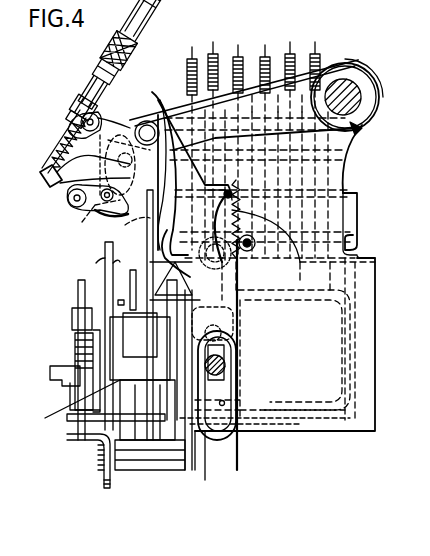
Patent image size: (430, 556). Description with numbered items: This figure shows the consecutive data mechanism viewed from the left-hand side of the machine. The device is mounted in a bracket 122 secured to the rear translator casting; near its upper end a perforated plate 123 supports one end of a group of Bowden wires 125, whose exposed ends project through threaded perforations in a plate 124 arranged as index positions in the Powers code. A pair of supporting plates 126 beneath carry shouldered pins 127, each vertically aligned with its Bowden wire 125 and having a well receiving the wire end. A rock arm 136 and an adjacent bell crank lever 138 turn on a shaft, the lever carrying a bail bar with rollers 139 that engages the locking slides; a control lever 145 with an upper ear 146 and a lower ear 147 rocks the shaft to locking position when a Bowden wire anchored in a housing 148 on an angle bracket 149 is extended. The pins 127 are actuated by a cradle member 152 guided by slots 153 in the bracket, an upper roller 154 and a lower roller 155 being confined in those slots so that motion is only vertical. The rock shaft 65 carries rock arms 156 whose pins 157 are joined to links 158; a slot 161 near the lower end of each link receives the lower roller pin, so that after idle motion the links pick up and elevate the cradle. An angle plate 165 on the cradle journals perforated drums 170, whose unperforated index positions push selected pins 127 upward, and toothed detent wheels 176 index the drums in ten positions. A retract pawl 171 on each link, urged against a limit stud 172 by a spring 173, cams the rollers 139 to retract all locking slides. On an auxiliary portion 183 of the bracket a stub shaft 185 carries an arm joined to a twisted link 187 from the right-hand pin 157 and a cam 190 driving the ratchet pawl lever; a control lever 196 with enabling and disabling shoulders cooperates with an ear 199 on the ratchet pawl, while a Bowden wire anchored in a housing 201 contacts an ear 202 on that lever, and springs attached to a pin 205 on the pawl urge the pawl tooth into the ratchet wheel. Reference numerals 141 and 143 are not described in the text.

The rock shaft 65 is at (362, 86).
The bracket 122 is at (351, 432).
The perforated plate 123 is at (360, 128).
The plate 124 is at (348, 160).
The Bowden wires 125 is at (238, 56).
The supporting plates 126 is at (358, 235).
The shouldered pins 127 is at (278, 275).
The rock arm 136 is at (70, 204).
The bell crank lever 138 is at (116, 148).
The rollers 139 is at (125, 225).
The link 141 is at (82, 222).
The lever arm 143 is at (85, 181).
The control lever 145 is at (68, 125).
The ear 146 is at (73, 108).
The ear 147 is at (50, 162).
The housing 148 is at (96, 78).
The angle bracket 149 is at (80, 98).
The cradle member 152 is at (263, 425).
The slots 153 is at (208, 198).
The upper roller 154 is at (249, 290).
The lower roller 155 is at (231, 356).
The rock arms 156 is at (300, 80).
The pin 157 is at (145, 126).
The links 158 is at (224, 448).
The slot 161 is at (224, 402).
The angle plate 165 is at (350, 375).
The perforated drums 170 is at (306, 355).
The retract pawl 171 is at (147, 252).
The limit stud 172 is at (182, 265).
The spring 173 is at (282, 248).
The toothed detent wheels 176 is at (77, 292).
The auxiliary portion 183 is at (180, 470).
The stub shaft 185 is at (93, 350).
The twisted link 187 is at (166, 150).
The cam 190 is at (67, 419).
The control lever 196 is at (110, 488).
The ear 199 is at (98, 264).
The housing 201 is at (80, 377).
The ear 202 is at (97, 450).
The pin 205 is at (83, 436).